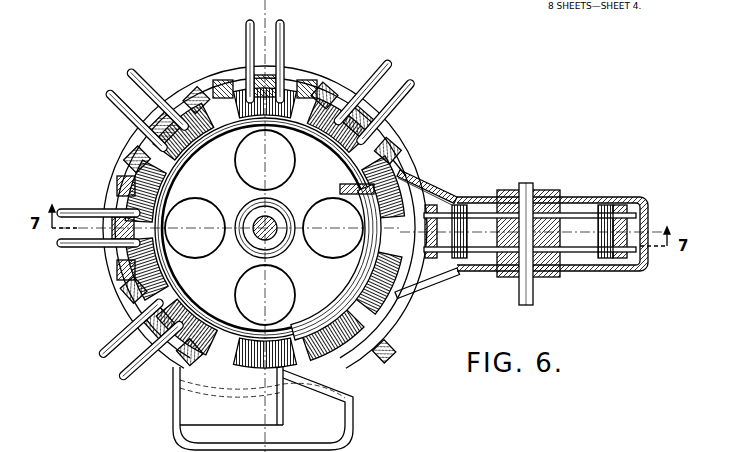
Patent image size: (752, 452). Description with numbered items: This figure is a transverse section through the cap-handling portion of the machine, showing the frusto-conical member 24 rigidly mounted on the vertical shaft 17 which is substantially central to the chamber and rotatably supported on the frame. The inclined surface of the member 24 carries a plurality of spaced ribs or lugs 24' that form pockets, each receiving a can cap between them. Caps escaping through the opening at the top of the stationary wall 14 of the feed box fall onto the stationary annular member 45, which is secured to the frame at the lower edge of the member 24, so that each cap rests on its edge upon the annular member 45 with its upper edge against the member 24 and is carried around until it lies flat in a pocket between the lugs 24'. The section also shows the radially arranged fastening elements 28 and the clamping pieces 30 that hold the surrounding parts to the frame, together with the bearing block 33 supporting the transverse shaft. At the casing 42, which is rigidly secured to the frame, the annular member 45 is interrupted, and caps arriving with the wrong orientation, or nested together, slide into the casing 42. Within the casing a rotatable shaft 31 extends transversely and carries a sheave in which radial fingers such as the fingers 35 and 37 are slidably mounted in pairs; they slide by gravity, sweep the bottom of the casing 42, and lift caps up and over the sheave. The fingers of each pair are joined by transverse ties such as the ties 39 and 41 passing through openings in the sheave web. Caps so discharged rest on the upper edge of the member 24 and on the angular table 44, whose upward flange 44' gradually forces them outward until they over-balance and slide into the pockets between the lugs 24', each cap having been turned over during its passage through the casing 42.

The stationary wall 14 is at (350, 407).
The vertical shaft 17 is at (272, 218).
The frusto-conical member 24 is at (276, 217).
The ribs or lugs 24' is at (298, 376).
The bolts 28 is at (266, 44).
The clamping blocks 30 is at (194, 106).
The rotatable shaft 31 is at (527, 183).
The bearing block 33 is at (546, 197).
The radial finger 35 is at (438, 206).
The radial finger 37 is at (634, 198).
The transverse tie 39 is at (459, 206).
The transverse tie 41 is at (604, 206).
The casing 42 is at (620, 260).
The angular table 44 is at (426, 154).
The upward flange 44' is at (427, 285).
The stationary annular member 45 is at (384, 331).